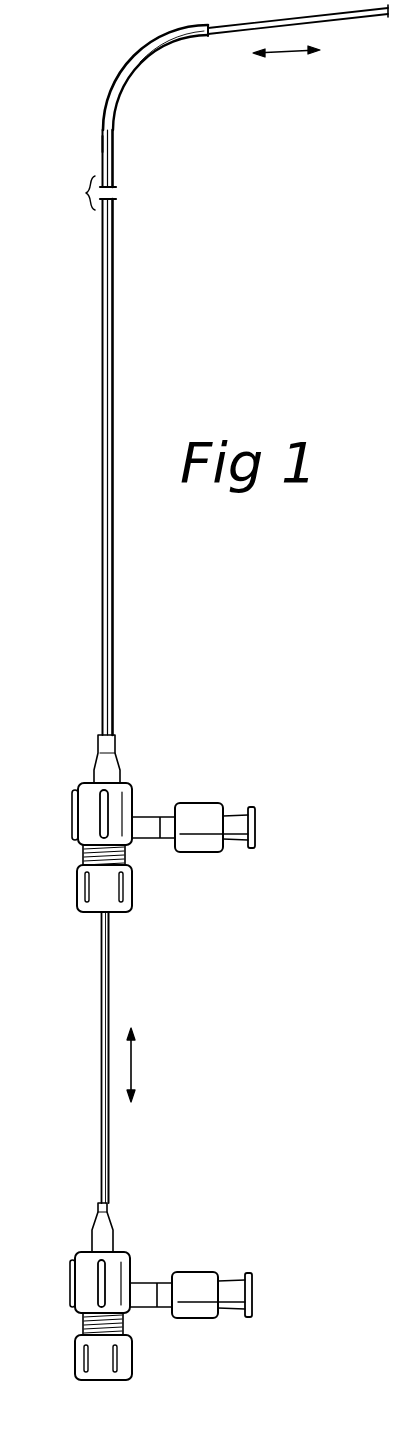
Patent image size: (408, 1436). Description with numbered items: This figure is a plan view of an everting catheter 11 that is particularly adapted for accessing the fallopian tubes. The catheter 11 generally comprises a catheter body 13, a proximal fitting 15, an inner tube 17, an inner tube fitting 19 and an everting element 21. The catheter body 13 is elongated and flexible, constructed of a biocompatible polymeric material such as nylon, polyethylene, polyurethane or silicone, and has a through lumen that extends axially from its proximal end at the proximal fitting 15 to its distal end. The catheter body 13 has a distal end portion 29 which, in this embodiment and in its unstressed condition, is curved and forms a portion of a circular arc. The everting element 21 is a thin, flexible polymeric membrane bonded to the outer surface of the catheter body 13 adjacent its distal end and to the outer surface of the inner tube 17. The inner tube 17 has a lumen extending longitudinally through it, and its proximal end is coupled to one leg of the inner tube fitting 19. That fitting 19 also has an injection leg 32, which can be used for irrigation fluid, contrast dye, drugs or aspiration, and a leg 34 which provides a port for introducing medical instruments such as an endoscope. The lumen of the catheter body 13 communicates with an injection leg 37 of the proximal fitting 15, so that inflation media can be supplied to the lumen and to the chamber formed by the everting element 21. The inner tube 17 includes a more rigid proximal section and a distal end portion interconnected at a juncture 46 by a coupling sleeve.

The everting catheter 11 is at (131, 390).
The catheter body 13 is at (113, 282).
The proximal fitting 15 is at (192, 790).
The inner tube 17 is at (108, 1018).
The inner tube fitting 19 is at (188, 1262).
The everting element 21 is at (333, 27).
The distal end portion 29 is at (135, 66).
The injection leg 32 is at (215, 1293).
The leg 34 is at (115, 1357).
The injection leg 37 is at (236, 825).
The juncture 46 is at (113, 145).